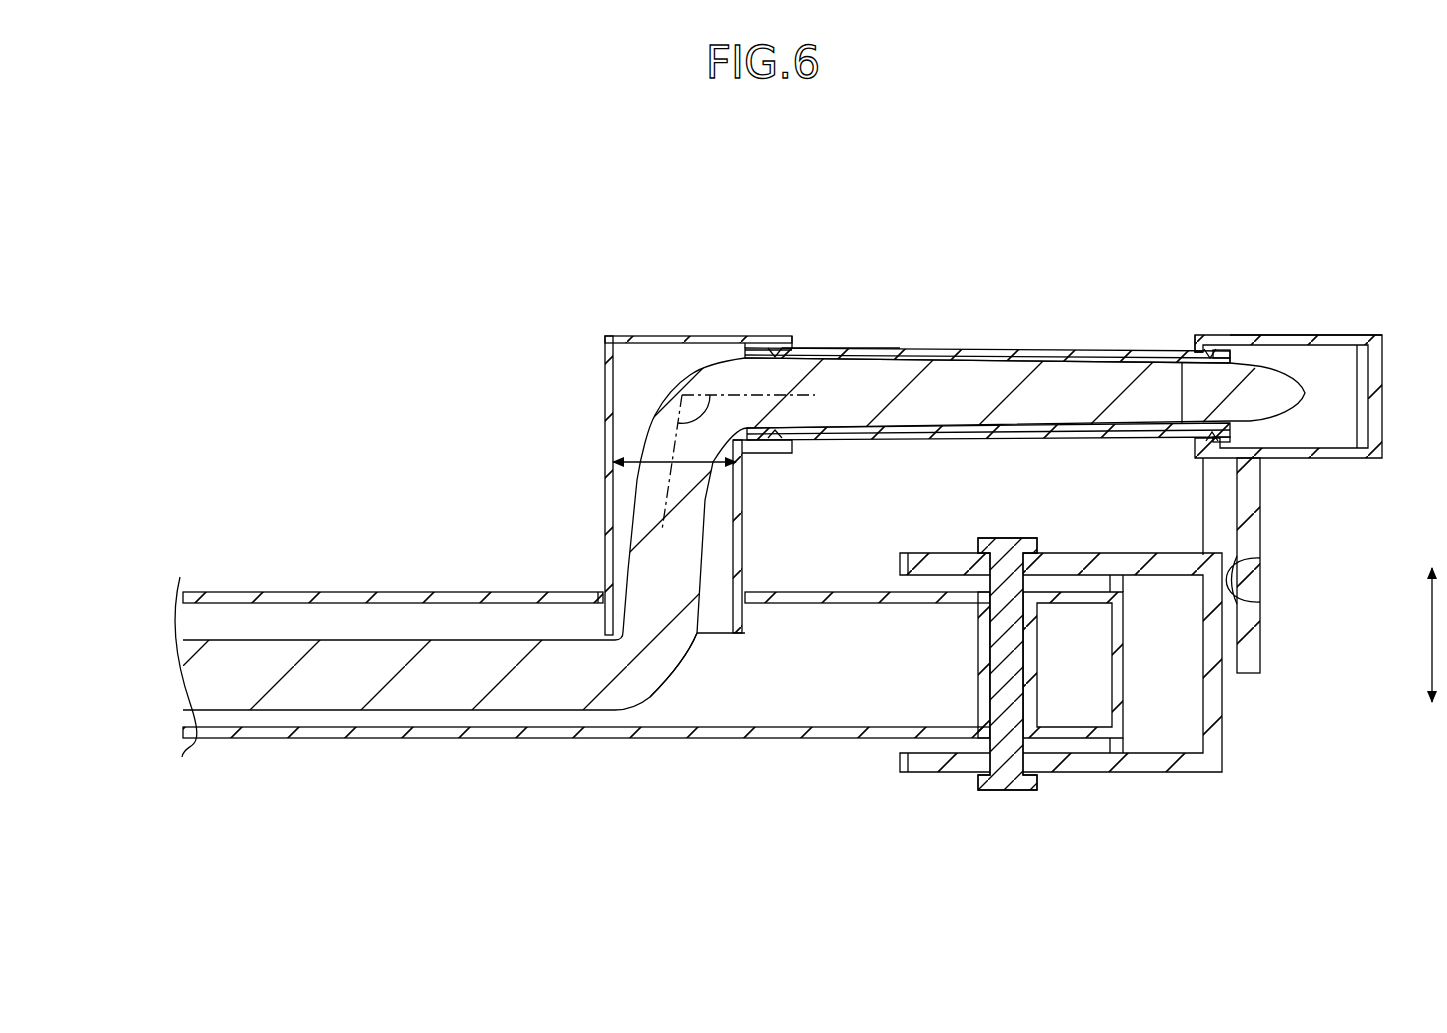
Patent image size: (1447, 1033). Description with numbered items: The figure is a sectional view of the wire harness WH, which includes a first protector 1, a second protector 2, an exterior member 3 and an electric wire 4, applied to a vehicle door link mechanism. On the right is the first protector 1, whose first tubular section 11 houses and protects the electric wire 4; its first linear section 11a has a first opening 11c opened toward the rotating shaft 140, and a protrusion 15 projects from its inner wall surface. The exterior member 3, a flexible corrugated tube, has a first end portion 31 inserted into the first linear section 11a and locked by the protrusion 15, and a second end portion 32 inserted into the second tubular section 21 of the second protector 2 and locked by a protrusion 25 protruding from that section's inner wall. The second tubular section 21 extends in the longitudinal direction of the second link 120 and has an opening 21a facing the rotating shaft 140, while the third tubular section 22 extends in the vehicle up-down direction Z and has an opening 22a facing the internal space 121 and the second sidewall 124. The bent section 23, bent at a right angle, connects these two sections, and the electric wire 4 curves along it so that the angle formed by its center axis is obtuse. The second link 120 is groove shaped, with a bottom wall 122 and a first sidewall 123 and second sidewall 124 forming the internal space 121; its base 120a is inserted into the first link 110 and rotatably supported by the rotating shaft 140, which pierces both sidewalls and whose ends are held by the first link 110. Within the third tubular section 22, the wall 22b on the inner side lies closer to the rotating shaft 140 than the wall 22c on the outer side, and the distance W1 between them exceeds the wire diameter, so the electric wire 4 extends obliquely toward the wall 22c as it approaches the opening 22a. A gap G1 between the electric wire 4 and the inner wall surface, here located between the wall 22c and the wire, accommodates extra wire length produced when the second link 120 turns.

The first protector 1 is at (1252, 457).
The second protector 2 is at (674, 453).
The exterior member 3 is at (978, 317).
The electric wire 4 is at (950, 385).
The first tubular section 11 is at (1252, 367).
The first linear section 11a is at (1268, 343).
The first opening 11c is at (1195, 348).
The protrusion 15 is at (1210, 350).
The second tubular section 21 is at (767, 338).
The opening 21a is at (790, 347).
The third tubular section 22 is at (744, 544).
The opening 22a is at (718, 645).
The wall on the inner side 22b is at (748, 572).
The wall on the outer side 22c is at (607, 568).
The bent section 23 is at (622, 340).
The protrusion 25 is at (778, 445).
The first end portion 31 is at (1222, 358).
The second end portion 32 is at (749, 350).
The first link 110 is at (1155, 765).
The second link 120 is at (544, 672).
The base 120a is at (1068, 735).
The internal space 121 is at (205, 620).
The bottom wall 122 is at (690, 700).
The first sidewall 123 is at (328, 597).
The second sidewall 124 is at (358, 738).
The rotating shaft 140 is at (1005, 538).
The wire harness WH is at (985, 168).
The distance W1 is at (615, 458).
The gap G1 is at (636, 385).
The vehicle up-down direction Z is at (1419, 635).